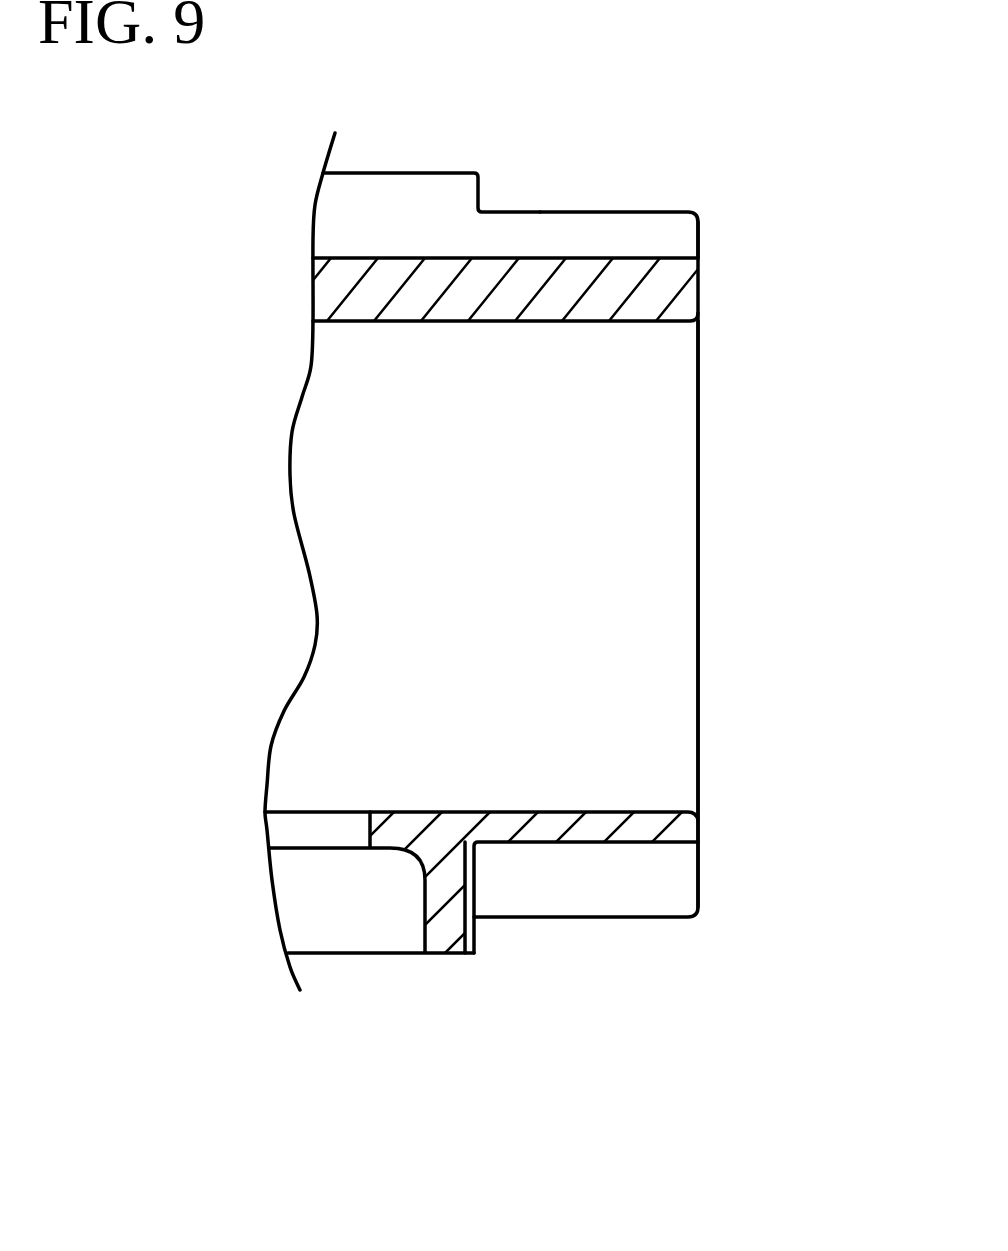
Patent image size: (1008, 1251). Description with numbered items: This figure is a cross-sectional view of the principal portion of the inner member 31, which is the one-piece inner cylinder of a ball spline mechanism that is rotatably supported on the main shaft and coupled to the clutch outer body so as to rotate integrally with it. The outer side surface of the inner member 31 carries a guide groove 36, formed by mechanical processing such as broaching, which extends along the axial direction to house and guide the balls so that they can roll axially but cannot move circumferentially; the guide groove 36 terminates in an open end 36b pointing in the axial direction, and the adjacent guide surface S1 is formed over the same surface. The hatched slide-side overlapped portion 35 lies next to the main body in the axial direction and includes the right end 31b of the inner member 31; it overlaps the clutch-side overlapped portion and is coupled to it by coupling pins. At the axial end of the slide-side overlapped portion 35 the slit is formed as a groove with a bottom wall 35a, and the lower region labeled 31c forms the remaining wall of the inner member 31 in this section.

The inner member 31 is at (540, 156).
The right end 31b is at (675, 287).
The bottom wall 31c is at (447, 930).
The slide-side overlapped portion 35 is at (593, 302).
The bottom wall 35a is at (592, 825).
The guide groove 36 is at (412, 200).
The open end 36b is at (667, 230).
The guide surface S1 is at (337, 208).